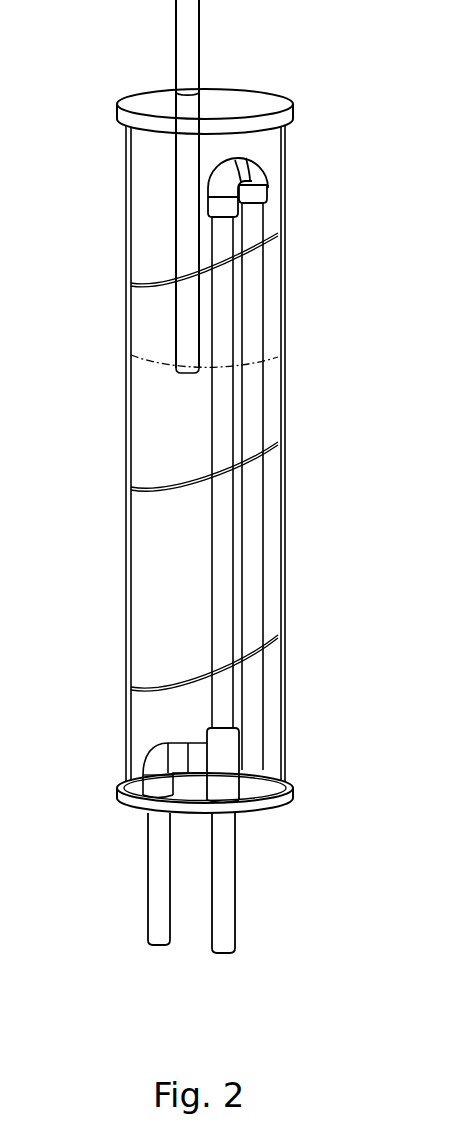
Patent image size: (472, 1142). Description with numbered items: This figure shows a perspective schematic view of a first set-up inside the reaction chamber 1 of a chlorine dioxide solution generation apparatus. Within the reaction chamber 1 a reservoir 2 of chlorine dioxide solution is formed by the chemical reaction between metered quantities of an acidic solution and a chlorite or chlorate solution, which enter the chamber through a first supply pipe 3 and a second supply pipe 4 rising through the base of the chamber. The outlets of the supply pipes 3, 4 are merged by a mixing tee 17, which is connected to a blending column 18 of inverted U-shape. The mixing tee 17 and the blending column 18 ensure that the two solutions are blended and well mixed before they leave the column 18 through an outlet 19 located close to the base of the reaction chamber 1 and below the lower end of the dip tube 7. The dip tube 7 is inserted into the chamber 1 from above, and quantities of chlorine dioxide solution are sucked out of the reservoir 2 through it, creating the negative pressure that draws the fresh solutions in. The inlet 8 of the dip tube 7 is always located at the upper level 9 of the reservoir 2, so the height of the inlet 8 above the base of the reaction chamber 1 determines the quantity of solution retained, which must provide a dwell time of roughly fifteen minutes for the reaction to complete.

The reaction chamber 1 is at (128, 612).
The reservoir 2 is at (170, 503).
The first supply pipe 3 is at (160, 893).
The second supply pipe 4 is at (232, 876).
The dip tube 7 is at (185, 258).
The inlet 8 is at (185, 377).
The upper level 9 is at (152, 360).
The mixing tee 17 is at (218, 765).
The blending column 18 is at (259, 510).
The outlet 19 is at (287, 768).